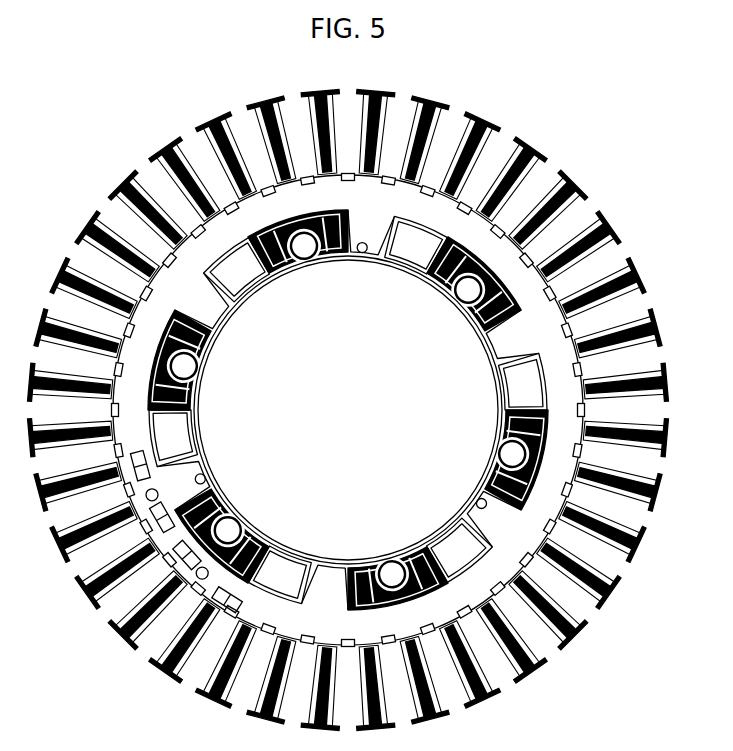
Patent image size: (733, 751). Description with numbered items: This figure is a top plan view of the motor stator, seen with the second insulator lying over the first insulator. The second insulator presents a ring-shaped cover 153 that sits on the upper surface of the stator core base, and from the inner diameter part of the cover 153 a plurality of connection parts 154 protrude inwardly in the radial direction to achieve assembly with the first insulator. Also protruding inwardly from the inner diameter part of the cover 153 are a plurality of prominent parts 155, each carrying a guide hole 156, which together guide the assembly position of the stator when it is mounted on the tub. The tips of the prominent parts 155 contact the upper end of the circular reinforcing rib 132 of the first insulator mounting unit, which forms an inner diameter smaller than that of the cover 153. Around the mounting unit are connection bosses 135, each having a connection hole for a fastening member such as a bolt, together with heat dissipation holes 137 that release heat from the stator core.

The reinforcing rib 132 is at (348, 410).
The connection boss 135 is at (443, 309).
The heat dissipation hole 137 is at (203, 437).
The cover 153 is at (378, 410).
The connection part 154 is at (471, 312).
The prominent part 155 is at (213, 531).
The guide hole 156 is at (363, 282).